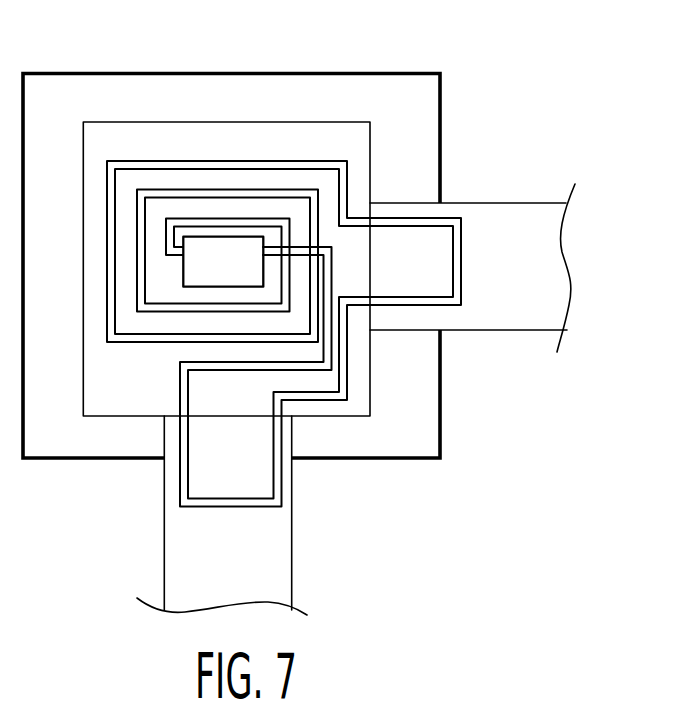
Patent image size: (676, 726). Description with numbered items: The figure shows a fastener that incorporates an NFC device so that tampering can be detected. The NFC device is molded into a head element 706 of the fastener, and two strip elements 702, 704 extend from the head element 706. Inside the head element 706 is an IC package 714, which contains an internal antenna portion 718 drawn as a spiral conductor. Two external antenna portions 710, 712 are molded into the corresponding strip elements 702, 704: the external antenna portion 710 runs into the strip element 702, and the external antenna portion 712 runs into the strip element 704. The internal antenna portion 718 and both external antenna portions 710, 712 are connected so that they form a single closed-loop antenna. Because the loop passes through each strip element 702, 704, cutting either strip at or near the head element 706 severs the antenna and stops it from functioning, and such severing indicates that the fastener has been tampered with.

The strip element 702 is at (522, 331).
The strip element 704 is at (292, 582).
The head element 706 is at (441, 111).
The external antenna portion 710 is at (410, 306).
The external antenna portion 712 is at (282, 483).
The IC package 714 is at (127, 154).
The internal antenna portion 718 is at (197, 161).